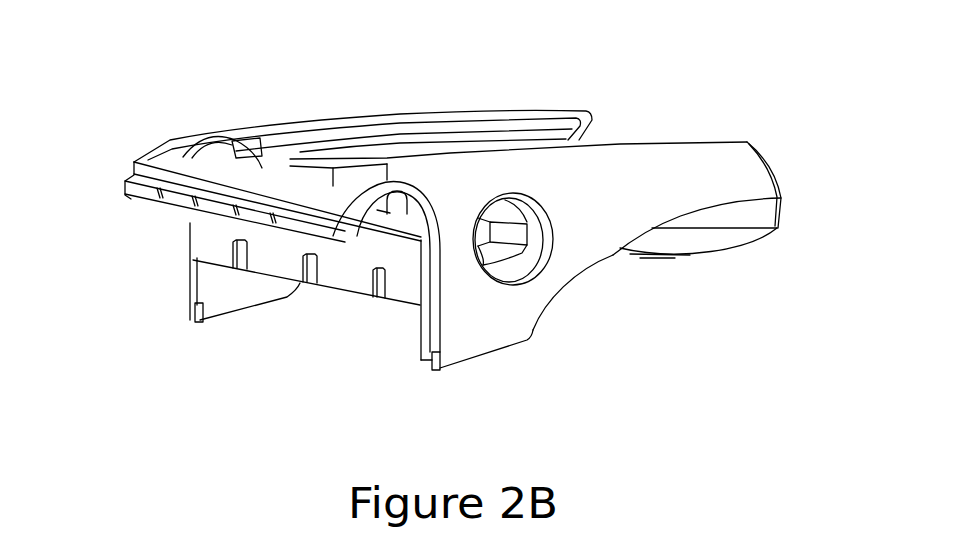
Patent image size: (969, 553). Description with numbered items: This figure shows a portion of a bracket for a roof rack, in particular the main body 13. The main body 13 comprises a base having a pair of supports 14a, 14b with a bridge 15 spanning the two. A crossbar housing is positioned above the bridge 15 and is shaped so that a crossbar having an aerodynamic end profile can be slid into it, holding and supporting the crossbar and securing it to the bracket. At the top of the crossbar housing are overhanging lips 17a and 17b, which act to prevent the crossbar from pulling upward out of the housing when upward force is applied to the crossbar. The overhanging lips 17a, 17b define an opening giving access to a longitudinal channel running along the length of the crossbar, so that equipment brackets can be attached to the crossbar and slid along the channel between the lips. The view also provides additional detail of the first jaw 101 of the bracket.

The main body 13 is at (432, 84).
The overhanging lip 17a is at (596, 125).
The overhanging lip 17b is at (757, 148).
The first jaw 101 is at (133, 190).
The support 14a is at (190, 313).
The support 14b is at (537, 330).
The bridge 15 is at (340, 272).